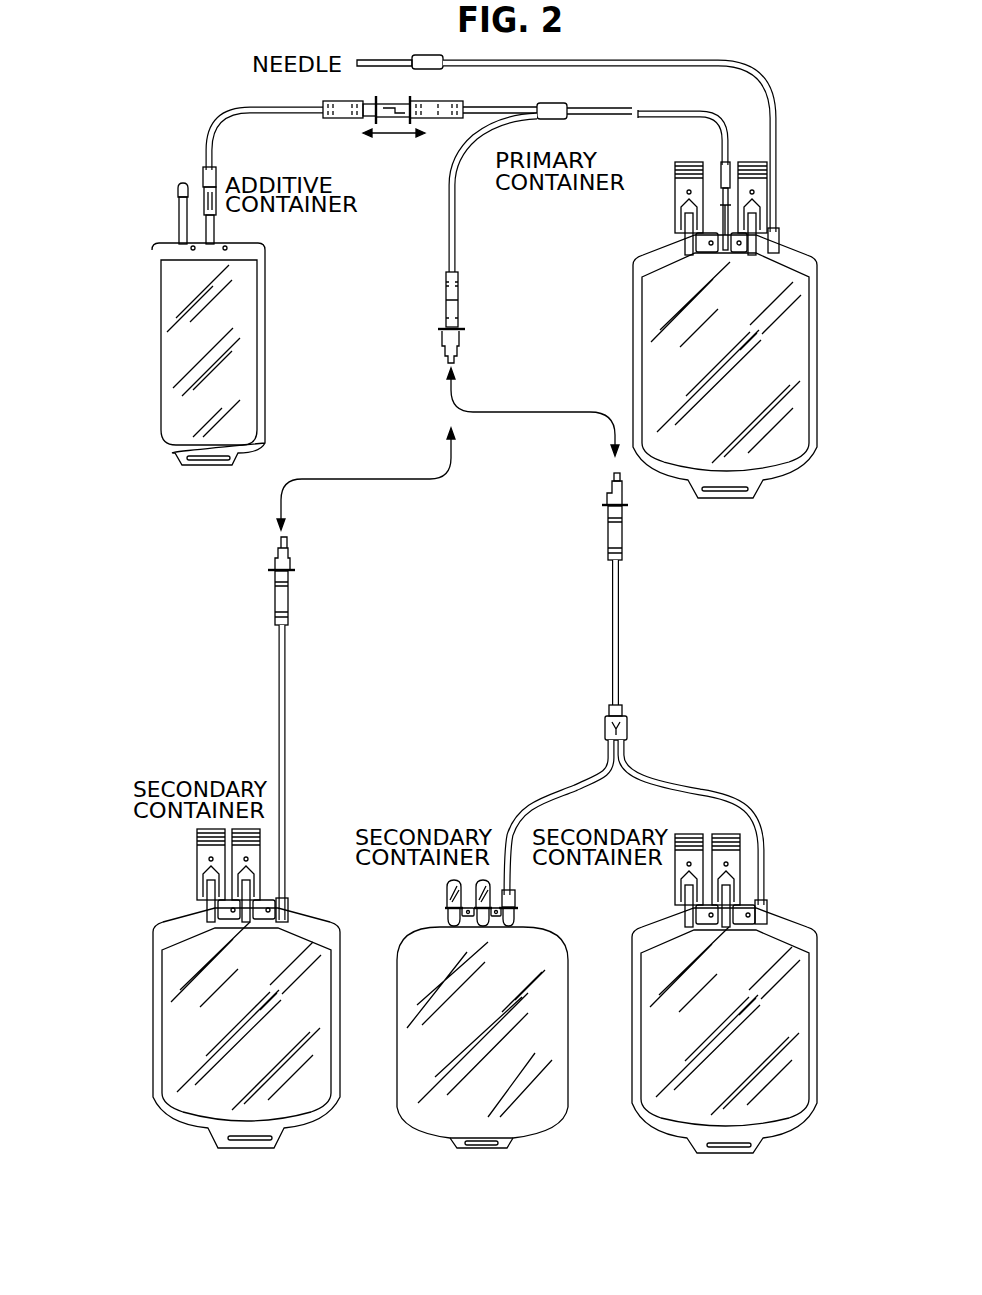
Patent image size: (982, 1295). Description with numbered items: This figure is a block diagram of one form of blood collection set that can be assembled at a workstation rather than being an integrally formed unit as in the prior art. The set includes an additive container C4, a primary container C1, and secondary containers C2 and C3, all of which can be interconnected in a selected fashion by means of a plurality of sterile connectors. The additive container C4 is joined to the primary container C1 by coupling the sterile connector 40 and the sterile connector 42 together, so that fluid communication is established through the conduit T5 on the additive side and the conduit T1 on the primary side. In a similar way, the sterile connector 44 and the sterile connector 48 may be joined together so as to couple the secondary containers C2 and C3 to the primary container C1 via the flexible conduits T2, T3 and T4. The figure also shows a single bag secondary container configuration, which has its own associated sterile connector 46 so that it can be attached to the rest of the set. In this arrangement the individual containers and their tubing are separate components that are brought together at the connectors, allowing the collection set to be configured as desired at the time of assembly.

The conduit T5 is at (230, 113).
The sterile connector 40 is at (345, 112).
The sterile connector 42 is at (440, 108).
The conduit T1 is at (652, 113).
The flexible conduit T2 is at (455, 221).
The sterile connector 44 is at (444, 297).
The primary container C1 is at (650, 318).
The additive container C4 is at (238, 362).
The sterile connector 46 is at (286, 600).
The sterile connector 48 is at (608, 539).
The flexible conduit T3 is at (285, 732).
The flexible conduit T4 is at (558, 795).
The secondary container C2 is at (293, 950).
The secondary container C3 is at (535, 955).